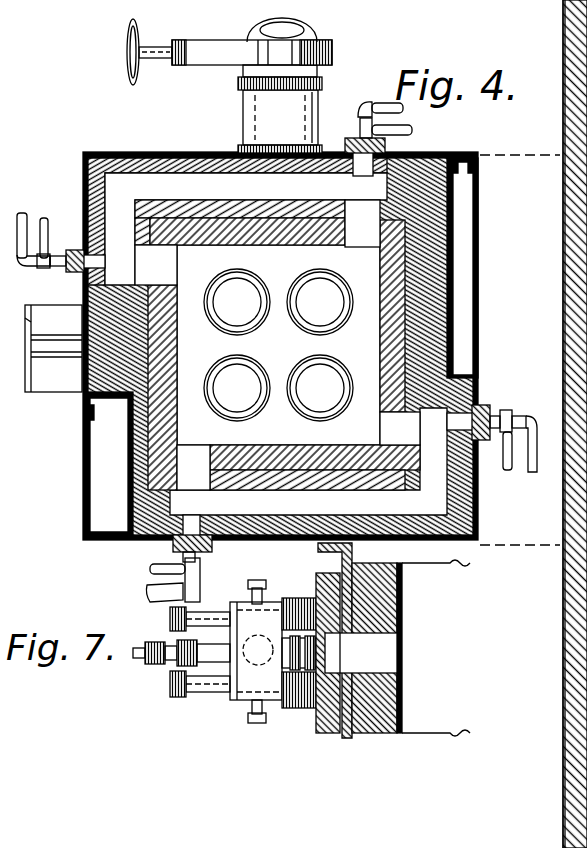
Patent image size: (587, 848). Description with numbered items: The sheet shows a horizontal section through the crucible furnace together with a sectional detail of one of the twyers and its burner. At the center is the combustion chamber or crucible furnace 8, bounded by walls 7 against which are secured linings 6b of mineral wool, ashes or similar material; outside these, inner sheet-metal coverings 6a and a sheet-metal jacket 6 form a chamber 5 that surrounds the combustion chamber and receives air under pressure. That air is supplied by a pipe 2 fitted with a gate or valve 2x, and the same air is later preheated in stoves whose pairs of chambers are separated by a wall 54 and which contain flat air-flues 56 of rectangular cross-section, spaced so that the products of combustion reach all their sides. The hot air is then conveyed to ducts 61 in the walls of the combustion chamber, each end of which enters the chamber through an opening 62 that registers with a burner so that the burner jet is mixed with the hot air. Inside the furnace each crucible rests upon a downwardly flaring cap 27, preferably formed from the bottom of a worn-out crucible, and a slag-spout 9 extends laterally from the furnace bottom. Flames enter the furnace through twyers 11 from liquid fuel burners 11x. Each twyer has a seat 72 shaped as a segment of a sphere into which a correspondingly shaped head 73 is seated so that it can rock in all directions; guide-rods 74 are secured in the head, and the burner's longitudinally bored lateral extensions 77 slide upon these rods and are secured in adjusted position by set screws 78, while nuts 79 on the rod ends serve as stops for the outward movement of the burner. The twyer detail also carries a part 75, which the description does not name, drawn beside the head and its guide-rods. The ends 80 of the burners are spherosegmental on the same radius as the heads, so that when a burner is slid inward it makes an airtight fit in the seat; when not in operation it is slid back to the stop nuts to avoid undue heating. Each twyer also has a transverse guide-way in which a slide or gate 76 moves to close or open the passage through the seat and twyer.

In FIG. 4, the pipe 2 is at (262, 107).
In FIG. 4, the gate or valve 2x is at (247, 52).
In FIG. 4, the chamber 5 is at (458, 272).
In FIG. 4, the sheet-metal jacket 6 is at (472, 330).
In FIG. 4, the inner sheet-metal coverings 6a is at (460, 346).
In FIG. 4, the linings 6b is at (127, 537).
In FIG. 4, the walls 7 is at (455, 232).
In FIG. 7, the walls 7 is at (378, 620).
In FIG. 4, the combustion chamber or crucible furnace 8 is at (278, 345).
In FIG. 4, the slag-spout 9 is at (50, 375).
In FIG. 4, the twyers 11 is at (378, 150).
In FIG. 7, the twyers 11 is at (214, 545).
In FIG. 4, the liquid fuel burners 11x is at (278, 279).
In FIG. 7, the liquid fuel burners 11x is at (177, 626).
In FIG. 4, the downwardly flaring cap 27 is at (278, 345).
In FIG. 4, the wall 54 is at (584, 221).
In FIG. 4, the flat air-flues 56 is at (585, 300).
In FIG. 4, the ducts 61 is at (276, 344).
In FIG. 4, the opening 62 is at (165, 268).
In FIG. 7, the seats 72 is at (395, 686).
In FIG. 7, the heads 73 is at (292, 600).
In FIG. 7, the guide-rods 74 is at (204, 624).
In FIG. 7, the plate 75 is at (326, 573).
In FIG. 7, the slide or gate 76 is at (352, 556).
In FIG. 7, the lateral extensions 77 is at (185, 722).
In FIG. 7, the set screws 78 is at (262, 583).
In FIG. 7, the nuts 79 is at (172, 618).
In FIG. 7, the ends 80 is at (345, 655).